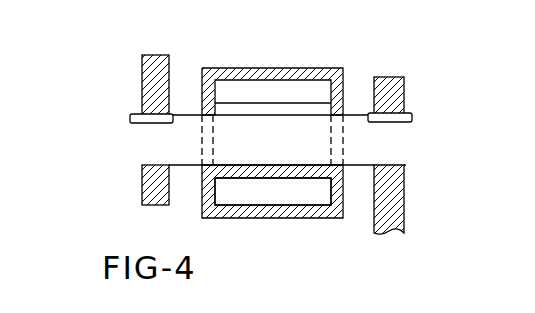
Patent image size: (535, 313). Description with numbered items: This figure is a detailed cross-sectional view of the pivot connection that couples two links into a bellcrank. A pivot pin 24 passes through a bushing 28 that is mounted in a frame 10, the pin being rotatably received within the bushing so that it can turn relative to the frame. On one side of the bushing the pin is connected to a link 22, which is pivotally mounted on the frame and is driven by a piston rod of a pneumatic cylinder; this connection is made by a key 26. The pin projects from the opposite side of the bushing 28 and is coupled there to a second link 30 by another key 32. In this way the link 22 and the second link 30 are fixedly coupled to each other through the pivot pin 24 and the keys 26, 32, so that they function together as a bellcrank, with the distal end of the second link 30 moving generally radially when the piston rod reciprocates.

The frame 10 is at (343, 35).
The link 22 is at (405, 205).
The pivot pin 24 is at (405, 148).
The key 26 is at (410, 116).
The bushing 28 is at (240, 183).
The second link 30 is at (142, 84).
The key 32 is at (131, 118).